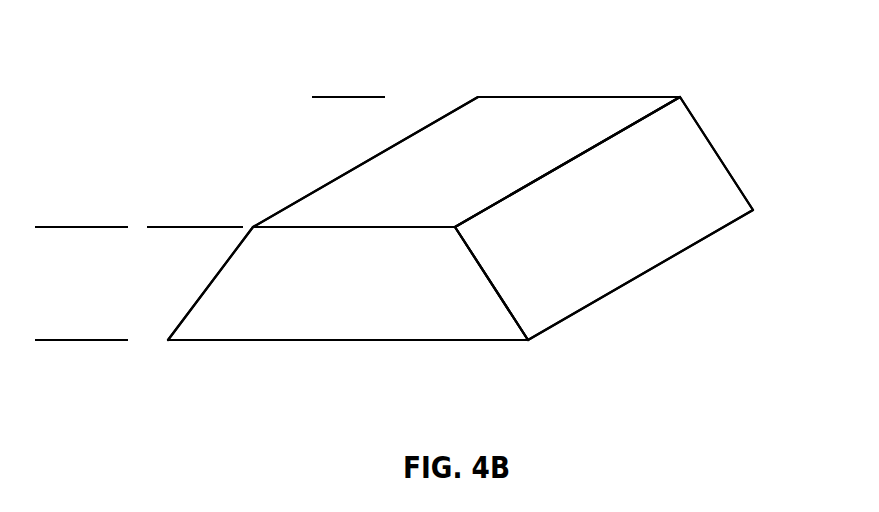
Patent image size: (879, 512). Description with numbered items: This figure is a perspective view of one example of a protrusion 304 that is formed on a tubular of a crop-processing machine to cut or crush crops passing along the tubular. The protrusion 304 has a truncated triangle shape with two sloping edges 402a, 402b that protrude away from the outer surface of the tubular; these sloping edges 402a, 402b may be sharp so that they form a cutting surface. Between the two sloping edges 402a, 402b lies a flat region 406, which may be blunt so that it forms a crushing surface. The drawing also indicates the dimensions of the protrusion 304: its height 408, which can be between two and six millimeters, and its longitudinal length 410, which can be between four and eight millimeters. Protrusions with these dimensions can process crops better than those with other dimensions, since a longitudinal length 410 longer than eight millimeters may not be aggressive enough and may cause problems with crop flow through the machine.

The protrusion 304 is at (634, 72).
The flat region 406 is at (425, 170).
The sloping edge 402a is at (193, 310).
The sloping edge 402b is at (615, 240).
The height 408 is at (70, 236).
The longitudinal length 410 is at (333, 108).